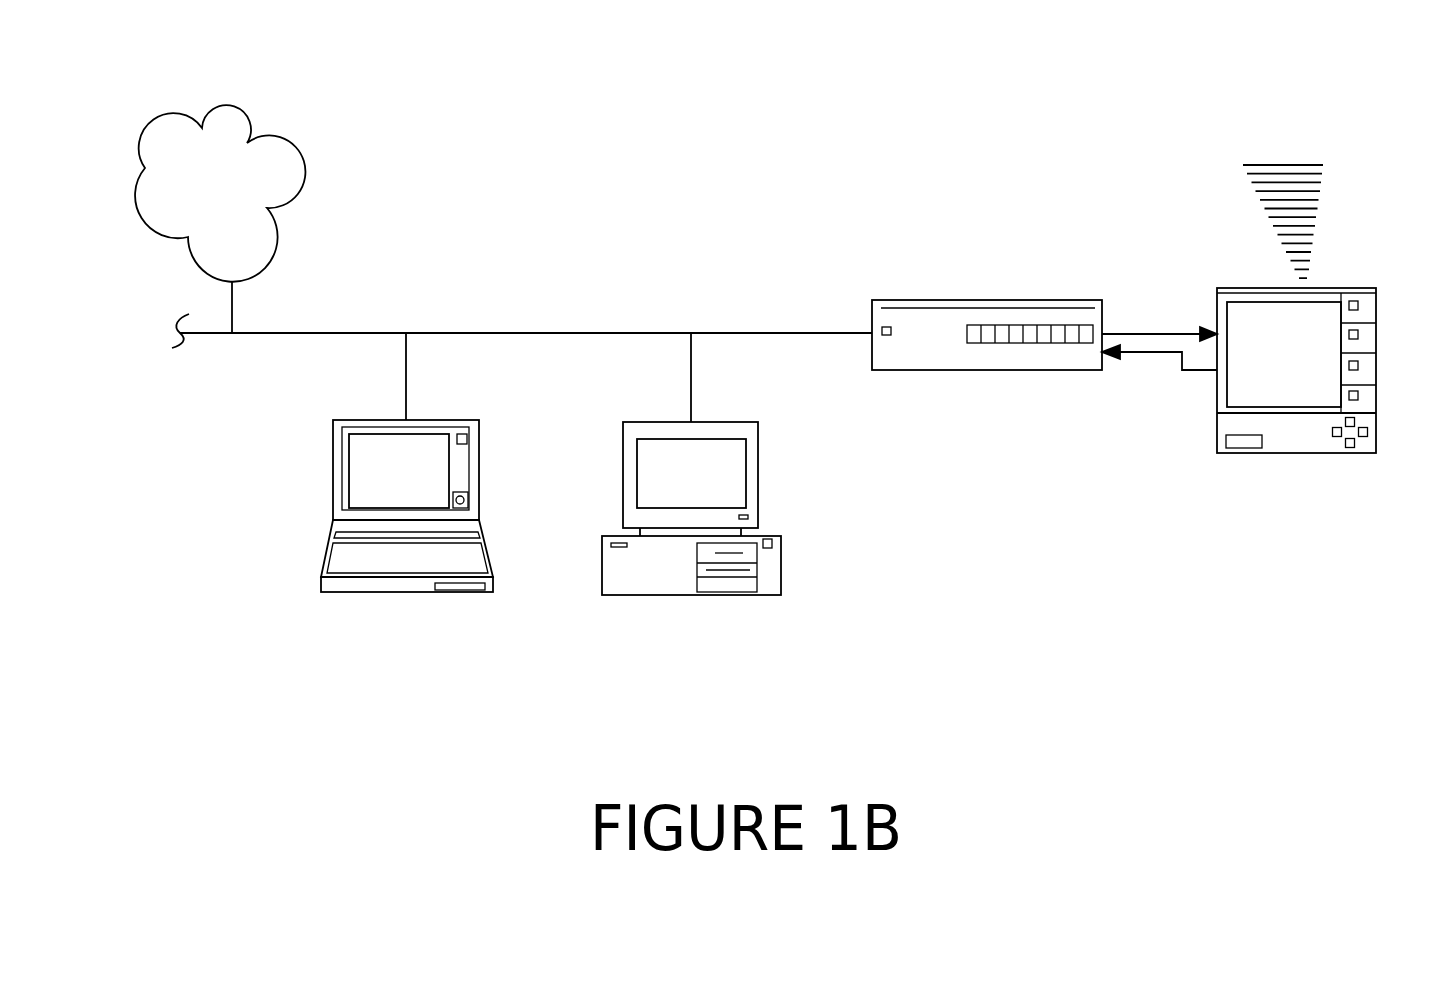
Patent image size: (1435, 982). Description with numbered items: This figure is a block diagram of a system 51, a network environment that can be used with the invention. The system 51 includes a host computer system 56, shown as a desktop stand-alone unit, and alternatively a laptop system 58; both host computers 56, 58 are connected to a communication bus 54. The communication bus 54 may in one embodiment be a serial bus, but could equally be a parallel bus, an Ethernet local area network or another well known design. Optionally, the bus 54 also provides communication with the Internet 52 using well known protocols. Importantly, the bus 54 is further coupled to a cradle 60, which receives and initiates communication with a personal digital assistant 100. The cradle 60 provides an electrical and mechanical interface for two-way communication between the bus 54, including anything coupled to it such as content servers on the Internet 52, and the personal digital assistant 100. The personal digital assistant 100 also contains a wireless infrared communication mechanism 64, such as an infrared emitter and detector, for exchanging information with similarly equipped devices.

The system 51 is at (135, 53).
The Internet 52 is at (295, 146).
The communication bus 54 is at (510, 333).
The host computer system 56 is at (726, 421).
The laptop system 58 is at (450, 420).
The cradle 60 is at (1018, 300).
The wireless infrared communication mechanism 64 is at (1243, 207).
The personal digital assistant 100 is at (1342, 288).